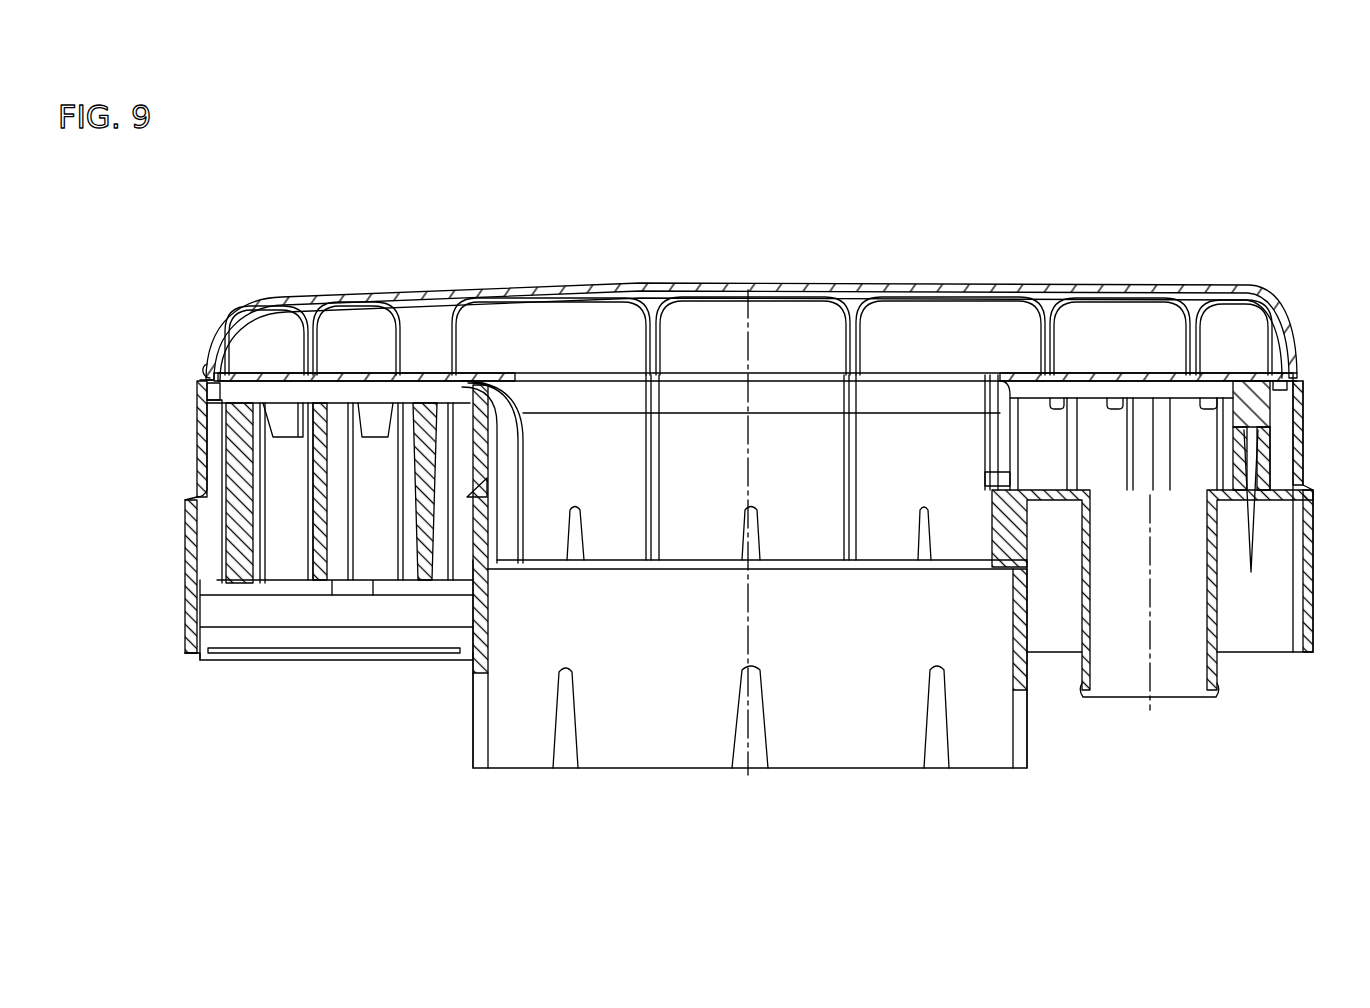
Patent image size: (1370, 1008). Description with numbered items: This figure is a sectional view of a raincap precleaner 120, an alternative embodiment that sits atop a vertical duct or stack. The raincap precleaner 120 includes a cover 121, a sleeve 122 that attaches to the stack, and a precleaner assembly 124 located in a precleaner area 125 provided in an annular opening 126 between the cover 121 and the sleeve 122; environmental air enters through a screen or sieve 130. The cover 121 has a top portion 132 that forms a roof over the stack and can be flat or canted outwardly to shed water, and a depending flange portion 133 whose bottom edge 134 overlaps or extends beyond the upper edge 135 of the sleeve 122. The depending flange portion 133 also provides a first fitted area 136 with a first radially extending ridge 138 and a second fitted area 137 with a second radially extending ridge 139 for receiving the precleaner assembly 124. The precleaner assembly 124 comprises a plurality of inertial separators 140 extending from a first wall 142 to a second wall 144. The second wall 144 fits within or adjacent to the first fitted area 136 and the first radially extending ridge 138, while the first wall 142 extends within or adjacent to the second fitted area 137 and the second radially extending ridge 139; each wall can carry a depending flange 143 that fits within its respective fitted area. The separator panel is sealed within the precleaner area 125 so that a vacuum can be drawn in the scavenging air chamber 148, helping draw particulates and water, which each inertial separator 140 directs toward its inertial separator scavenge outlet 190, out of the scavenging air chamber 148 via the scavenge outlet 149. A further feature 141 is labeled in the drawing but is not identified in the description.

The raincap precleaner 120 is at (1272, 187).
The cover 121 is at (240, 313).
The sleeve 122 is at (653, 742).
The precleaner assembly 124 is at (218, 428).
The precleaner area 125 is at (152, 527).
The annular opening 126 is at (254, 702).
The screen or sieve 130 is at (405, 656).
The top portion 132 is at (553, 290).
The depending flange portion 133 is at (200, 378).
The bottom edge 134 is at (185, 652).
The upper edge 135 is at (486, 372).
The first fitted area 136 is at (198, 467).
The second fitted area 137 is at (186, 566).
The first radially extending ridge 138 is at (203, 366).
The second radially extending ridge 139 is at (190, 494).
The inertial separator 140 is at (387, 457).
The lip 141 is at (205, 392).
The first wall 142 is at (337, 502).
The depending flange 143 is at (192, 607).
The second wall 144 is at (438, 377).
The scavenging air chamber 148 is at (1071, 403).
The scavenge outlet 149 is at (1215, 665).
The inertial separator scavenge outlet 190 is at (1212, 400).